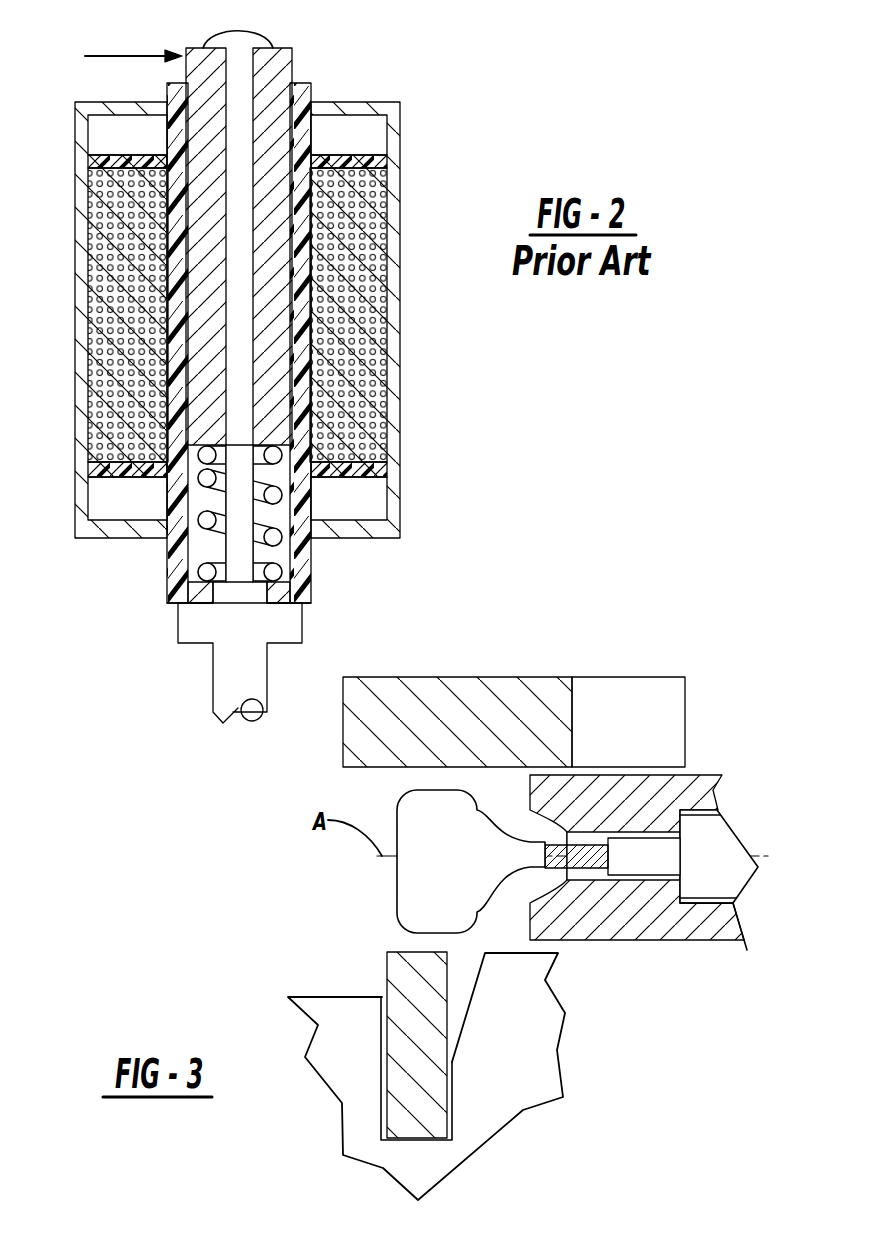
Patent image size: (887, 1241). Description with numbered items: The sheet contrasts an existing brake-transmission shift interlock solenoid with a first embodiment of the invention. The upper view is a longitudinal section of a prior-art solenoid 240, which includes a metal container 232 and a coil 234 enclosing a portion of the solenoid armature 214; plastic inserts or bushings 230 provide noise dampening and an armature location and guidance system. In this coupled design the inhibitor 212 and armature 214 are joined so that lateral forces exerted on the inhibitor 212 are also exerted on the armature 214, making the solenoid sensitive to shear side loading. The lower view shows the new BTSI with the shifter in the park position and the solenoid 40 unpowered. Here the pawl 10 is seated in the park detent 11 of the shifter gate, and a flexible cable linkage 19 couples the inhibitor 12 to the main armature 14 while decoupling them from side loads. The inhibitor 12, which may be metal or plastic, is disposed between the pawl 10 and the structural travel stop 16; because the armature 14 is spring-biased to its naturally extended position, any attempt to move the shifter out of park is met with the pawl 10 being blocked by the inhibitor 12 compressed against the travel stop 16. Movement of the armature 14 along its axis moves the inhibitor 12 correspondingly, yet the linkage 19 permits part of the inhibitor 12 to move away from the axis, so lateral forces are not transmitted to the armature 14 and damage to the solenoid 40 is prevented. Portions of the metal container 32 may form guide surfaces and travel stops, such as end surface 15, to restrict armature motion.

In FIG. 2, the inhibitor 212 is at (277, 57).
In FIG. 2, the solenoid armature 214 is at (209, 236).
In FIG. 2, the coil 234 is at (122, 378).
In FIG. 2, the plastic inserts or bushings 230 is at (297, 455).
In FIG. 2, the metal container 232 is at (395, 490).
In FIG. 2, the solenoid 240 is at (518, 128).
In FIG. 3, the pawl 10 is at (387, 962).
In FIG. 3, the park detent 11 is at (455, 1100).
In FIG. 3, the inhibitor 12 is at (402, 895).
In FIG. 3, the armature 14 is at (708, 830).
In FIG. 3, the end surface 15 is at (683, 903).
In FIG. 3, the structural travel stop 16 is at (493, 697).
In FIG. 3, the flexible cable linkage 19 is at (587, 858).
In FIG. 3, the metal container 32 is at (722, 920).
In FIG. 3, the solenoid 40 is at (703, 773).